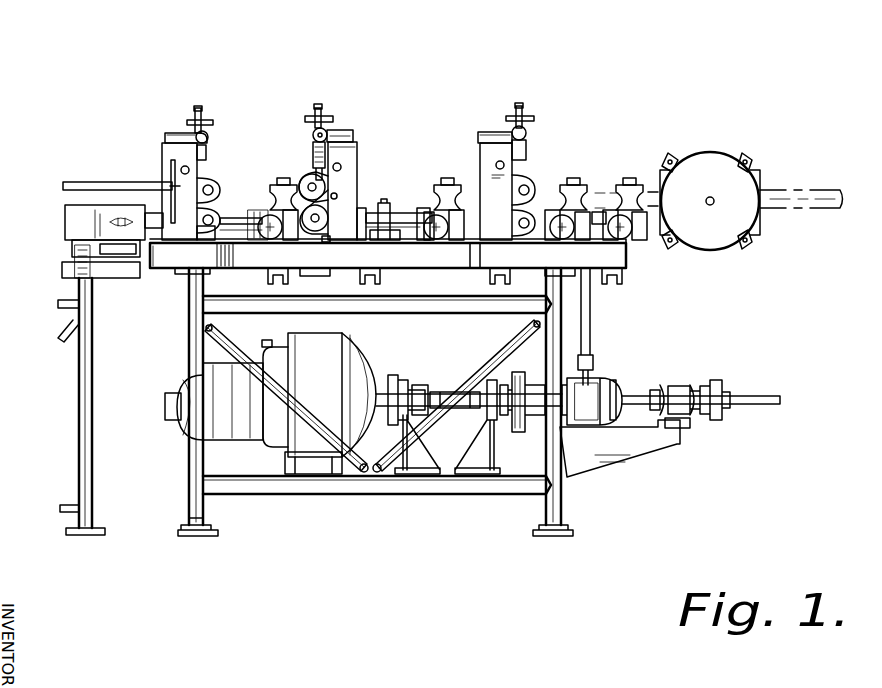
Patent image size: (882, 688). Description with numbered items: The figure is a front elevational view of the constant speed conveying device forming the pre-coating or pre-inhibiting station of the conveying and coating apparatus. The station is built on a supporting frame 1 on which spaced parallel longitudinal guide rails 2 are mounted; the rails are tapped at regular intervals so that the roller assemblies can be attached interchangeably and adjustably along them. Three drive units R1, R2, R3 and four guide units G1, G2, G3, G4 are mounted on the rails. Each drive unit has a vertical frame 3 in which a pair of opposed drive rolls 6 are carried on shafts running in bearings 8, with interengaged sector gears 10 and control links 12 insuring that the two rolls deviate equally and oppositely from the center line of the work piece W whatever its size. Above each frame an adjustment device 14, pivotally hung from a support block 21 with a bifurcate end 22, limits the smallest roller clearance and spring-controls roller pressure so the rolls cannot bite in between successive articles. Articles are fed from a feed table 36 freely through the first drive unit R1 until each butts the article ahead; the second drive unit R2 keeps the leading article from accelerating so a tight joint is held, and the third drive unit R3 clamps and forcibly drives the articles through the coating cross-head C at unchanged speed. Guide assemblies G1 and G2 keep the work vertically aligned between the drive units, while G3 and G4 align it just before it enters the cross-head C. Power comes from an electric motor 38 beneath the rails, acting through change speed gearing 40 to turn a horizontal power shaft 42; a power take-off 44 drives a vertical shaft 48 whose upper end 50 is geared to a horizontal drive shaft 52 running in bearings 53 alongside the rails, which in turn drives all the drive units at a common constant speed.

The supporting frame 1 is at (195, 458).
The guide rails 2 is at (166, 264).
The vertical frame 3 is at (236, 53).
The drive rolls 6 is at (306, 177).
The bearings 8 is at (341, 167).
The sector gears 10 is at (318, 238).
The control links 12 is at (318, 166).
The adjustment device 14 is at (314, 116).
The support block 21 is at (352, 131).
The bifurcate end 22 is at (326, 133).
The feed table 36 is at (80, 215).
The electric motor 38 is at (178, 425).
The change speed gearing 40 is at (352, 368).
The power shaft 42 is at (725, 395).
The power take-off 44 is at (592, 388).
The vertical shaft 48 is at (590, 318).
The upper end of vertical shaft 50 is at (588, 215).
The horizontal drive shaft 52 is at (223, 226).
The bearings 53 is at (392, 212).
The first drive unit R1 is at (168, 157).
The second drive unit R2 is at (345, 177).
The third drive unit R3 is at (482, 165).
The first guide roll assembly G1 is at (272, 185).
The second guide roll assembly G2 is at (446, 183).
The third guide assembly G3 is at (570, 184).
The fourth guide assembly G4 is at (628, 184).
The coating cross-head C is at (705, 160).
The work piece W is at (784, 198).